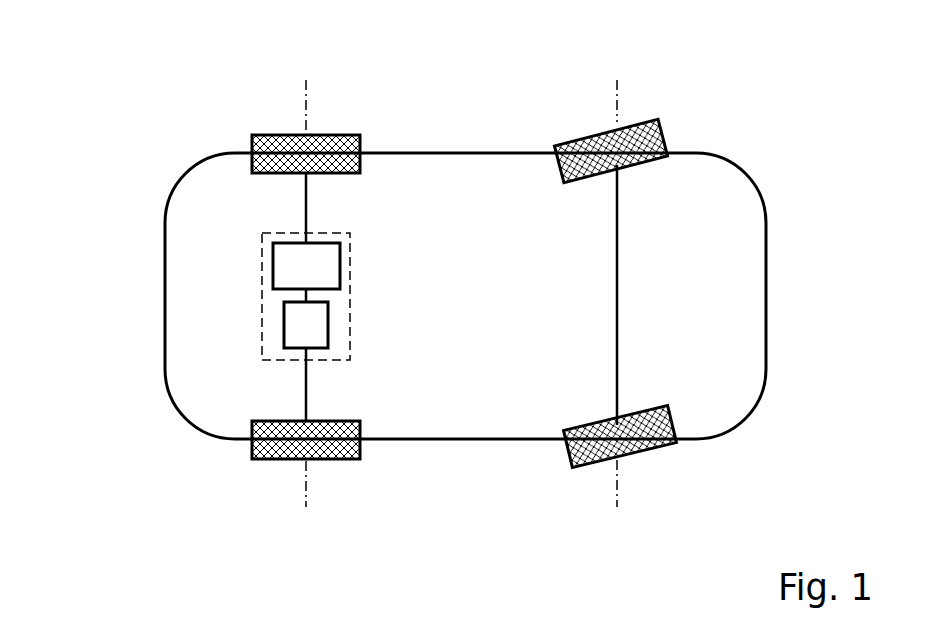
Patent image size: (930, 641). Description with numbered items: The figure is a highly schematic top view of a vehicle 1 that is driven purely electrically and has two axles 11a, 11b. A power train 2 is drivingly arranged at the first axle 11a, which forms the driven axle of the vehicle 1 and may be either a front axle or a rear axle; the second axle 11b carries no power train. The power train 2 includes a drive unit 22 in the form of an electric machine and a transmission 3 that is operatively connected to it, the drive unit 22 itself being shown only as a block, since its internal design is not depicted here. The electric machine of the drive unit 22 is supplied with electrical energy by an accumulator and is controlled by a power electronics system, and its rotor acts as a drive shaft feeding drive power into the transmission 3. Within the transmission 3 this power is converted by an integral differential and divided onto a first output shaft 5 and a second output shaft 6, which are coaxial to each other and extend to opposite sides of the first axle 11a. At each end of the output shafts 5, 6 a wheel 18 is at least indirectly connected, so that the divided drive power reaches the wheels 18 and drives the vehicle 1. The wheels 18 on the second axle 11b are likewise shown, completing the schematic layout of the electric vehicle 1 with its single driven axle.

The vehicle 1 is at (182, 112).
The power train 2 is at (273, 260).
The transmission 3 is at (292, 279).
The first output shaft 5 is at (303, 390).
The second output shaft 6 is at (304, 212).
The first axle 11a is at (305, 106).
The second axle 11b is at (618, 105).
The wheel 18 is at (325, 143).
The drive unit 22 is at (300, 330).